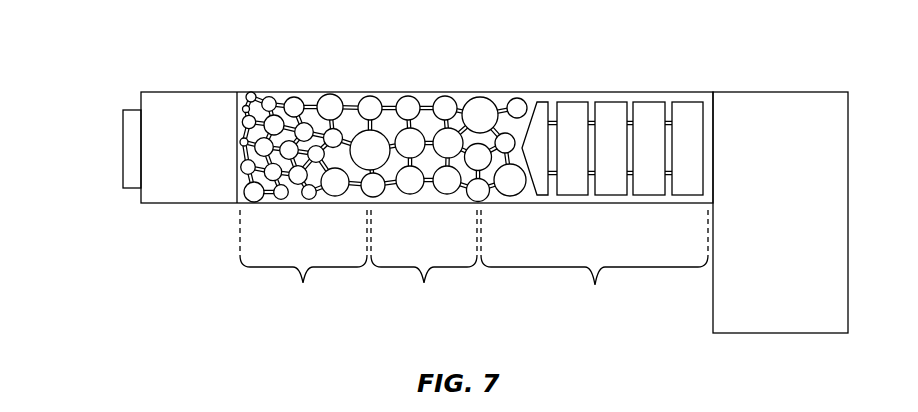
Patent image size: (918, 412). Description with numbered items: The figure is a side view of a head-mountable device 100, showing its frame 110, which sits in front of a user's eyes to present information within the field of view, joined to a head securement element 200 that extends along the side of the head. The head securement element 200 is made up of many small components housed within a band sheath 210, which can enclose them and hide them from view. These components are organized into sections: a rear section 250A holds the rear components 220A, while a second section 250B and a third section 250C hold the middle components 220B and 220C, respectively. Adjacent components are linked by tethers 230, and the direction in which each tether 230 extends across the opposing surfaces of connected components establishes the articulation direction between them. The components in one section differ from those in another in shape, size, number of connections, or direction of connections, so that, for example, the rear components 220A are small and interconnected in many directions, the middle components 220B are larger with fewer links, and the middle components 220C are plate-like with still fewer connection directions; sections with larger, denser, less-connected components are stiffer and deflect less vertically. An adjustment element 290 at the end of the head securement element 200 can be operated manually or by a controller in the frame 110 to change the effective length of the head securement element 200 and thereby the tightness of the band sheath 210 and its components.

The head-mountable device 100 is at (120, 53).
The frame 110 is at (778, 92).
The head securement element 200 is at (185, 92).
The band sheath 210 is at (243, 92).
The rear components 220A is at (297, 92).
The middle components 220B is at (410, 92).
The middle components 220C is at (643, 92).
The tether 230 is at (523, 195).
The rear section 250A is at (306, 170).
The middle section 250B is at (438, 166).
The middle section 250C is at (594, 169).
The adjustment element 290 is at (123, 152).